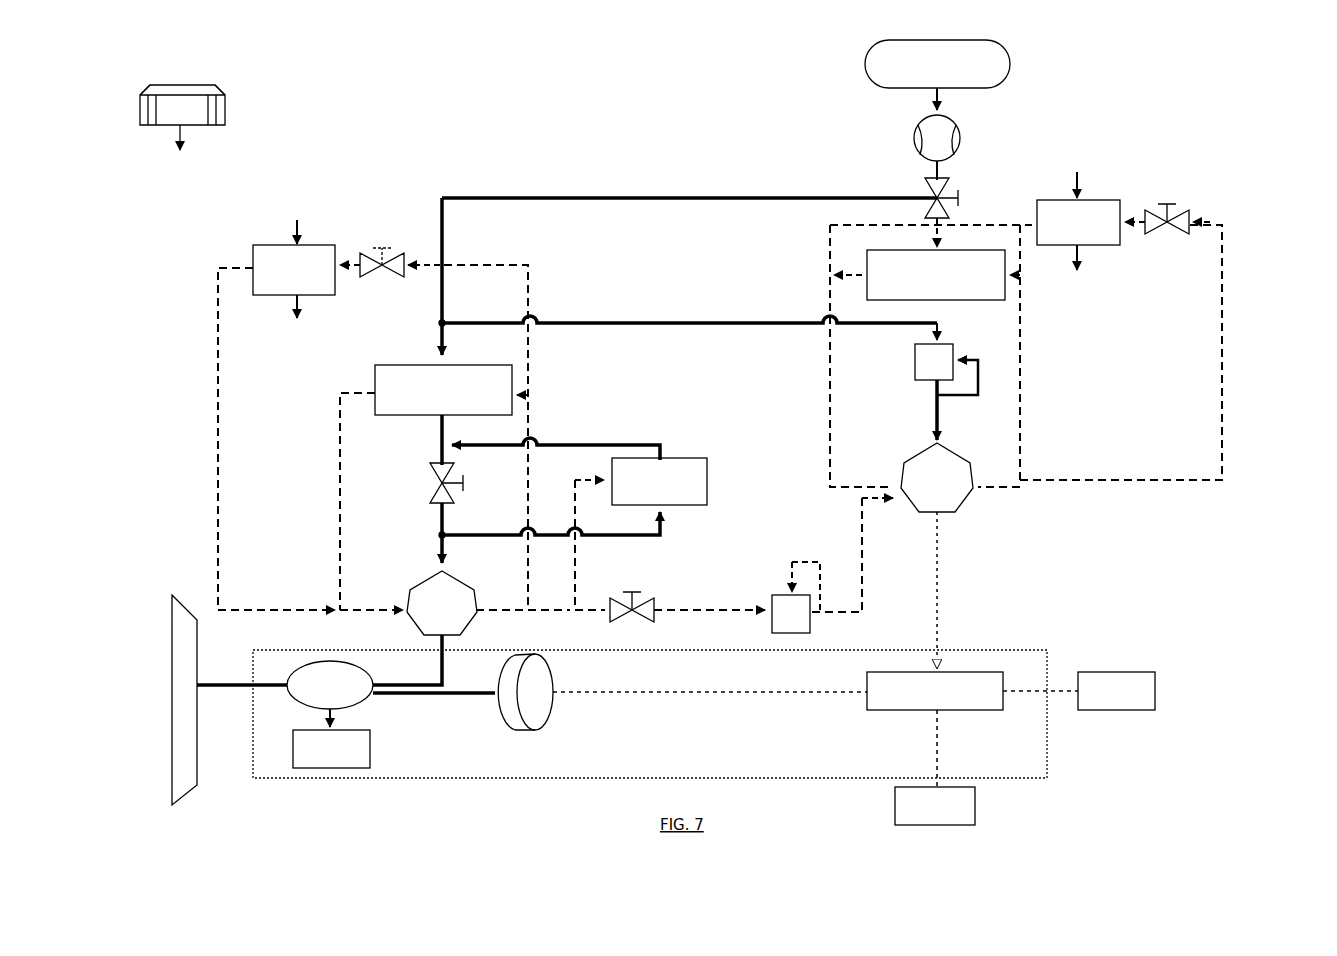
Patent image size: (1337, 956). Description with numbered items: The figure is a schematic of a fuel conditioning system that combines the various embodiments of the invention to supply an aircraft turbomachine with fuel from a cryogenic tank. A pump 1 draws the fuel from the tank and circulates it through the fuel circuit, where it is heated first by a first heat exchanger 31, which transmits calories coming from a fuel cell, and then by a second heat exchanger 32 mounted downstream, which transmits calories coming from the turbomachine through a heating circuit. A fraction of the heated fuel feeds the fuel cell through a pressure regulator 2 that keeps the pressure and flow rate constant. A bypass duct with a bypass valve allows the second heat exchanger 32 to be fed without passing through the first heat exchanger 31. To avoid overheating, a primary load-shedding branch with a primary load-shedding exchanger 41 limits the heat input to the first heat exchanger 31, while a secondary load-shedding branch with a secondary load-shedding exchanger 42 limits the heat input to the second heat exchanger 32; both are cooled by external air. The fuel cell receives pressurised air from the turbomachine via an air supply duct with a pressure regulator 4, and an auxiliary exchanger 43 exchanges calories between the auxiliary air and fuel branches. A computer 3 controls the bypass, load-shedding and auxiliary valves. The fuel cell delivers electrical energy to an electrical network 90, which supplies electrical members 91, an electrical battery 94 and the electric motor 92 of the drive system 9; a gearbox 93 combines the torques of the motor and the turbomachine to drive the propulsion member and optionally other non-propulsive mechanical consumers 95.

The pump 1 is at (960, 142).
The pressure regulator 2 is at (1000, 383).
The computer 3 is at (160, 85).
The pressure regulator 4 is at (772, 575).
The drive system 9 is at (415, 778).
The first heat exchanger 31 is at (936, 275).
The second heat exchanger 32 is at (443, 390).
The primary load-shedding exchanger 41 is at (1078, 235).
The secondary load-shedding exchanger 42 is at (294, 281).
The auxiliary exchanger 43 is at (574, 496).
The electrical network 90 is at (935, 691).
The electrical members 91 is at (1079, 691).
The electric motor 92 is at (512, 712).
The gearbox 93 is at (391, 681).
The electrical battery 94 is at (935, 767).
The non-propulsive mechanical consumers 95 is at (331, 749).